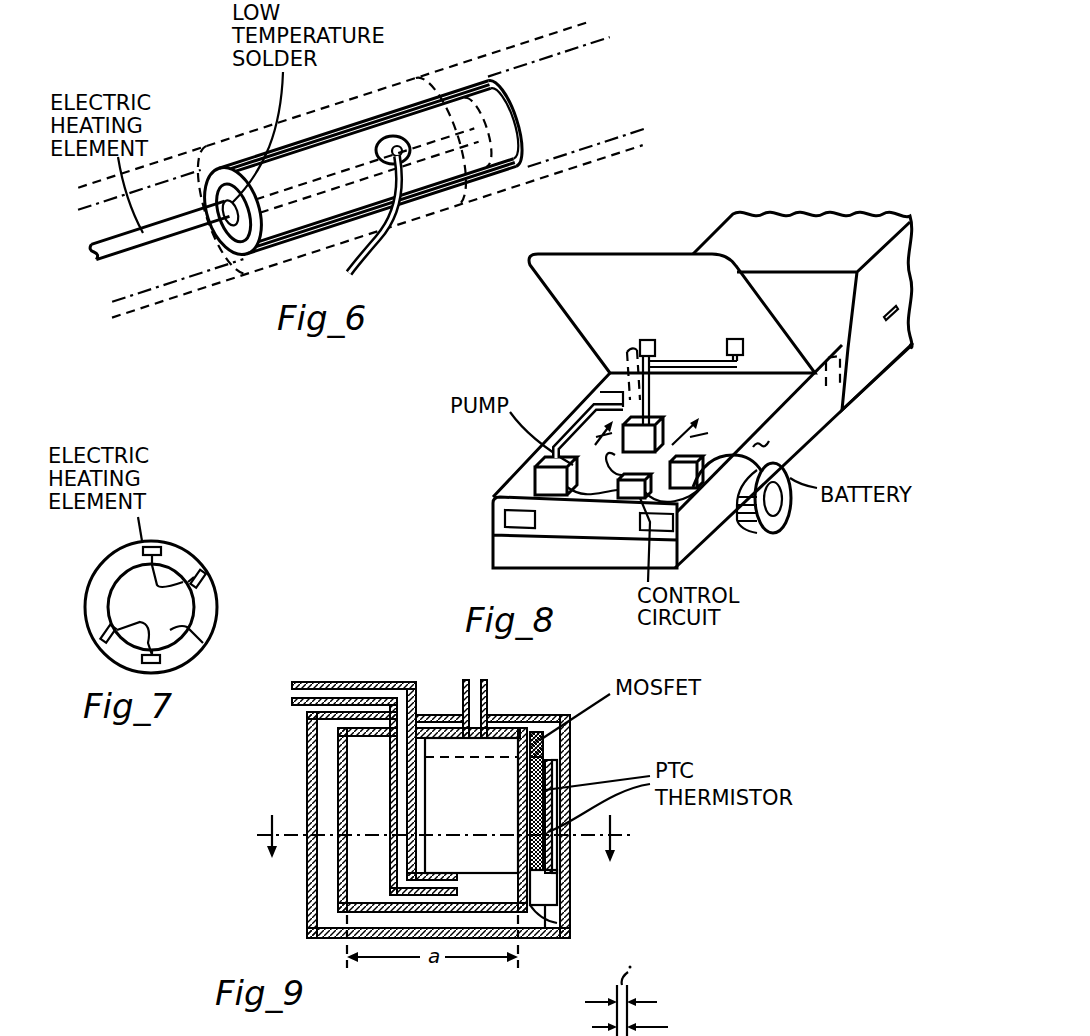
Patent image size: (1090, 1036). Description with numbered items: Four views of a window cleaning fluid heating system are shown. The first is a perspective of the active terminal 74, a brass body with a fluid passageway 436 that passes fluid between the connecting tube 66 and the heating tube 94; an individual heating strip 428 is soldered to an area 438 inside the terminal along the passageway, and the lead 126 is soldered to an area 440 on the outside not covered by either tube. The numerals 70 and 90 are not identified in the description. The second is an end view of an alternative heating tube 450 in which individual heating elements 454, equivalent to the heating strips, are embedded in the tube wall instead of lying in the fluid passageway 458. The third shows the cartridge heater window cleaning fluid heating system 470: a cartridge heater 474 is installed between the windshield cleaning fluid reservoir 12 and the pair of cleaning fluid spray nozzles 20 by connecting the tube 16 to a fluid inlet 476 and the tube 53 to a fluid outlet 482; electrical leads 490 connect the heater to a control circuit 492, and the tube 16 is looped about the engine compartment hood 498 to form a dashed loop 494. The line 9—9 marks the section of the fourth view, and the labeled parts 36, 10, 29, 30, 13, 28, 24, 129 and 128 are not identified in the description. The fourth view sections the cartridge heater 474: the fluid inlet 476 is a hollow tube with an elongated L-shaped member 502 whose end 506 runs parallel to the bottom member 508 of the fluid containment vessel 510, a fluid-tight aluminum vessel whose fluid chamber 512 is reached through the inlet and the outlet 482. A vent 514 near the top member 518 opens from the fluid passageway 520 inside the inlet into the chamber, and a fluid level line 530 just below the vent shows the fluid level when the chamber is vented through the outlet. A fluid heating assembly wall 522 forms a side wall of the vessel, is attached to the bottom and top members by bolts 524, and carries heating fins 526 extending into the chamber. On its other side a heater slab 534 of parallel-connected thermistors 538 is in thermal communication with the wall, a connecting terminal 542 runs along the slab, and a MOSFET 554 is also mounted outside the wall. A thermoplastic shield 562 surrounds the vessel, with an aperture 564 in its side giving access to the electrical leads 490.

In FIG. 6, the tubular housing 70 is at (522, 118).
In FIG. 6, the end cap 90 is at (243, 258).
In FIG. 6, the fluid passageway 436 is at (218, 247).
In FIG. 6, the heating tube 94 is at (222, 146).
In FIG. 6, the connecting tube 66 is at (455, 70).
In FIG. 6, the area on the inside of the terminal 438 is at (224, 203).
In FIG. 6, the active terminal 74 is at (417, 205).
In FIG. 6, the individual heating strip 428 is at (148, 249).
In FIG. 6, the area on the outside of the terminal 440 is at (411, 153).
In FIG. 6, the lead 126 is at (372, 262).
In FIG. 7, the heating tube 450 is at (160, 542).
In FIG. 7, the individual heating elements 454 is at (155, 605).
In FIG. 7, the fluid passageway 458 is at (203, 645).
In FIG. 8, the engine compartment hood 498 is at (603, 246).
In FIG. 8, the vehicle body 36 is at (840, 308).
In FIG. 8, the vehicle washer system / section line 10 is at (842, 423).
In FIG. 9, the vehicle washer system / section line 10 is at (442, 836).
In FIG. 8, the frame rail 29 is at (755, 449).
In FIG. 8, the chassis member 30 is at (794, 455).
In FIG. 8, the wheel 13 is at (742, 494).
In FIG. 8, the windshield cleaning fluid reservoir 12 is at (533, 464).
In FIG. 8, the tube 16 is at (555, 426).
In FIG. 8, the fluid outlet 482 is at (652, 412).
In FIG. 9, the fluid outlet 482 is at (482, 692).
In FIG. 8, the tube 53 is at (650, 381).
In FIG. 8, the cleaning fluid spray nozzles 20 is at (727, 348).
In FIG. 8, the loop 494 is at (622, 356).
In FIG. 8, the fluid inlet 476 is at (620, 393).
In FIG. 9, the fluid inlet 476 is at (307, 685).
In FIG. 8, the cartridge heater window cleaning fluid heating system 470 is at (711, 399).
In FIG. 9, the cartridge heater window cleaning fluid heating system 470 is at (331, 941).
In FIG. 8, the cartridge heater 474 is at (668, 424).
In FIG. 9, the cartridge heater 474 is at (561, 940).
In FIG. 8, the line 9— 9 is at (643, 437).
In FIG. 8, the fluid line 28 is at (570, 470).
In FIG. 8, the electrical leads 490 is at (613, 455).
In FIG. 8, the control circuit 492 is at (620, 500).
In FIG. 8, the wiring 24 is at (682, 500).
In FIG. 8, the control circuit box 129 is at (697, 497).
In FIG. 8, the reservoir 128 is at (559, 516).
In FIG. 9, the end 506 is at (455, 882).
In FIG. 9, the fluid containment vessel 510 is at (337, 887).
In FIG. 9, the fluid level line 530 is at (521, 794).
In FIG. 9, the top member 518 is at (432, 734).
In FIG. 9, the fluid passageway 520 is at (408, 790).
In FIG. 9, the heating fins 526 is at (466, 837).
In FIG. 9, the fluid heating assembly wall 522 is at (522, 850).
In FIG. 9, the thermistors 538 is at (528, 802).
In FIG. 9, the MOSFET 554 is at (545, 750).
In FIG. 9, the heater slab 534 is at (550, 768).
In FIG. 9, the connecting terminal 542 is at (558, 882).
In FIG. 9, the aperture 564 is at (560, 912).
In FIG. 9, the bolts 524 is at (540, 717).
In FIG. 9, the thermoplastic shield 562 is at (307, 740).
In FIG. 9, the vent 514 is at (398, 748).
In FIG. 9, the elongated L-shaped member 502 is at (397, 810).
In FIG. 9, the fluid chamber 512 is at (387, 866).
In FIG. 9, the bottom member 508 is at (470, 912).